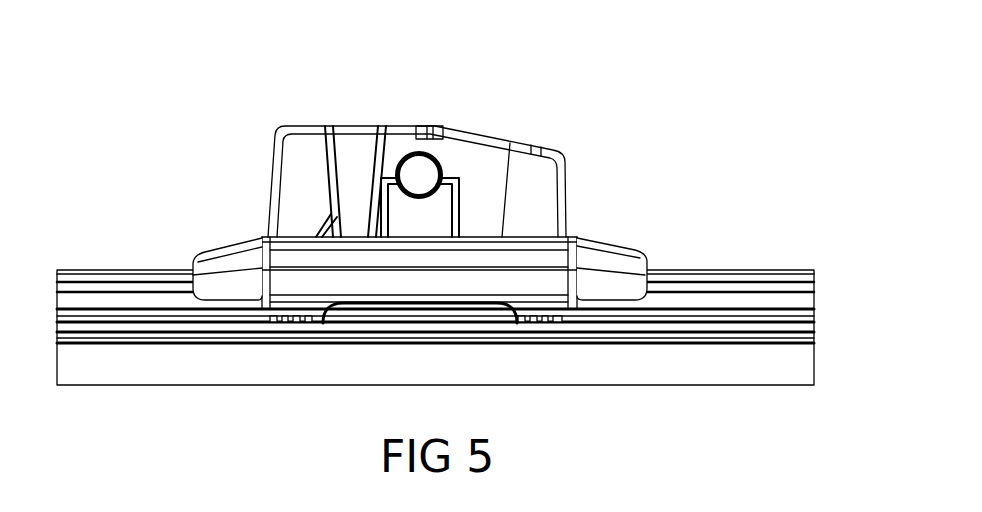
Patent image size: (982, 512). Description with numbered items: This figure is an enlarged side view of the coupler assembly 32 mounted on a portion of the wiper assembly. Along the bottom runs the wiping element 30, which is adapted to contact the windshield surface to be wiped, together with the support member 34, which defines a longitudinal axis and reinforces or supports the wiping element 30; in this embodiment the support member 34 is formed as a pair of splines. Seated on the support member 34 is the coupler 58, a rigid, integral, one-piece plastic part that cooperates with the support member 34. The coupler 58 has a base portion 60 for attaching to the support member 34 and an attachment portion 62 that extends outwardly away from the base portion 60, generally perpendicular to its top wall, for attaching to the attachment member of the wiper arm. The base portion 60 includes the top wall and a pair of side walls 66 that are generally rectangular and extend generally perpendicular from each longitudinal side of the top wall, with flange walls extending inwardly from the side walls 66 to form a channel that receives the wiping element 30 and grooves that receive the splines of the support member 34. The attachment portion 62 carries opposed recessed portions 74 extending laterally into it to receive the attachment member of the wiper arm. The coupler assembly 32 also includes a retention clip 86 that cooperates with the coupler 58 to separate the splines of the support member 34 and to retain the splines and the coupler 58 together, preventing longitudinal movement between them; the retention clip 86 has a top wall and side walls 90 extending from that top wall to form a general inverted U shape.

The wiping element 30 is at (712, 385).
The support member 34 is at (757, 293).
The coupler assembly 32 is at (527, 140).
The coupler 58 is at (567, 188).
The base portion 60 is at (236, 238).
The attachment portion 62 is at (528, 173).
The side walls 66 is at (480, 282).
The recessed portions 74 is at (418, 167).
The retention clip 86 is at (347, 123).
The side walls 90 is at (353, 198).